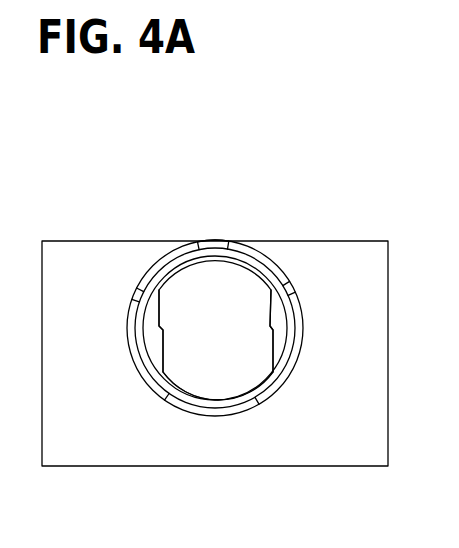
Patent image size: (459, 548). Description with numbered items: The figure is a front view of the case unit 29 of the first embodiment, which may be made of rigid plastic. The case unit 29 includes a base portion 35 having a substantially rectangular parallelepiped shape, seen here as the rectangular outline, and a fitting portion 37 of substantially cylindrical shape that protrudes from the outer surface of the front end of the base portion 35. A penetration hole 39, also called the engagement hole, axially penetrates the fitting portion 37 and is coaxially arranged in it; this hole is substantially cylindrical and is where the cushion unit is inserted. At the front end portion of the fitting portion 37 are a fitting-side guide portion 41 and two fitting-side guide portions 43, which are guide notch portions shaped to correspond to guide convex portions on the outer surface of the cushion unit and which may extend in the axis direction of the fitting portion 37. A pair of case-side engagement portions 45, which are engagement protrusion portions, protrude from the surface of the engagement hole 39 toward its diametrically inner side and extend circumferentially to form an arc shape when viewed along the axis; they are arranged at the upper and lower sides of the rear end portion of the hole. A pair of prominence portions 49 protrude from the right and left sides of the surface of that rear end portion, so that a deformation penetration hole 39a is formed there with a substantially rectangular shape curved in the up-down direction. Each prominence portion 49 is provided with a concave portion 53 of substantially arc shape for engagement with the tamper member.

The case unit 29 is at (331, 169).
The base portion 35 is at (327, 253).
The fitting portion 37 is at (216, 413).
The penetration hole 39 is at (190, 290).
The deformation penetration hole 39a is at (197, 370).
The fitting-side guide portion 41 is at (213, 248).
The fitting-side guide portion 43 is at (130, 293).
The case-side engagement portion 45 is at (254, 262).
The prominence portion 49 is at (142, 357).
The concave portion 53 is at (271, 327).